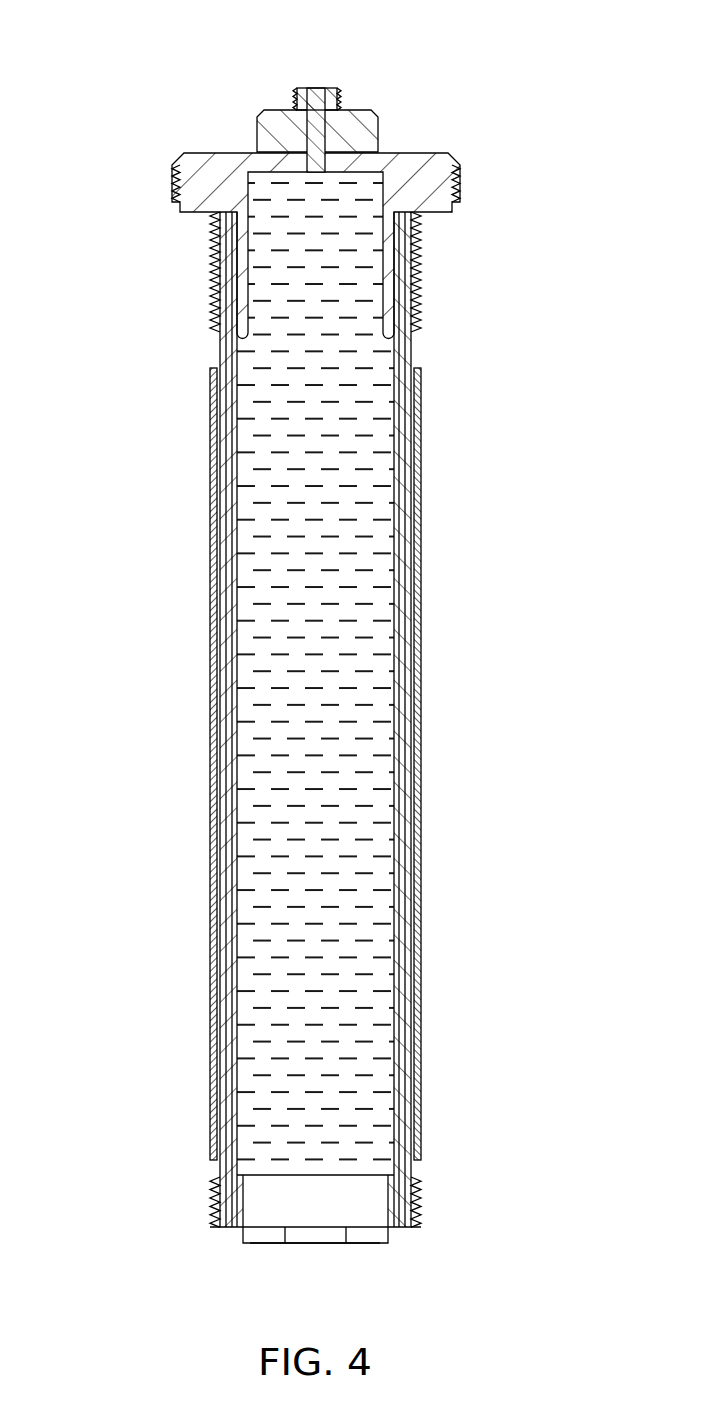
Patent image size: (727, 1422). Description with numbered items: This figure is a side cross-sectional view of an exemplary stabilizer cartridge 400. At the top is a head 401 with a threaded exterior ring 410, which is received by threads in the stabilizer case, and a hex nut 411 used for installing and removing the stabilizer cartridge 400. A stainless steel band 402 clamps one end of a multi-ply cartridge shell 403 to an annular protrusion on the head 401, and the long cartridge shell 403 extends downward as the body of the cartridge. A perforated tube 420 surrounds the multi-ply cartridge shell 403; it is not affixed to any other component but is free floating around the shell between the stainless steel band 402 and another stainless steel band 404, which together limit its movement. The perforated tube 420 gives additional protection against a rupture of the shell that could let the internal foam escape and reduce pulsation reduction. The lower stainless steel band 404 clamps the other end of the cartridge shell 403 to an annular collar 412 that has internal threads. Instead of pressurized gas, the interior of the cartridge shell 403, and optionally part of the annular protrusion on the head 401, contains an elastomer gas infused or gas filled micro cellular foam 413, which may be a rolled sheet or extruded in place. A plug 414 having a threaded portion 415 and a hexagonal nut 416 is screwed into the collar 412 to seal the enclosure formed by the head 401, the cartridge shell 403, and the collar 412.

The stabilizer cartridge 400 is at (222, 61).
The head 401 is at (398, 158).
The threaded exterior ring 410 is at (172, 182).
The hex nut 411 is at (265, 125).
The stainless steel band 402 is at (213, 265).
The multi-ply cartridge shell 403 is at (228, 686).
The gas filled micro cellular foam 413 is at (385, 410).
The perforated tube 420 is at (212, 428).
The stainless steel band 404 is at (210, 1200).
The annular collar 412 is at (380, 1210).
The threaded portion 415 is at (268, 1212).
The hexagonal nut 416 is at (317, 1247).
The plug 414 is at (346, 1259).